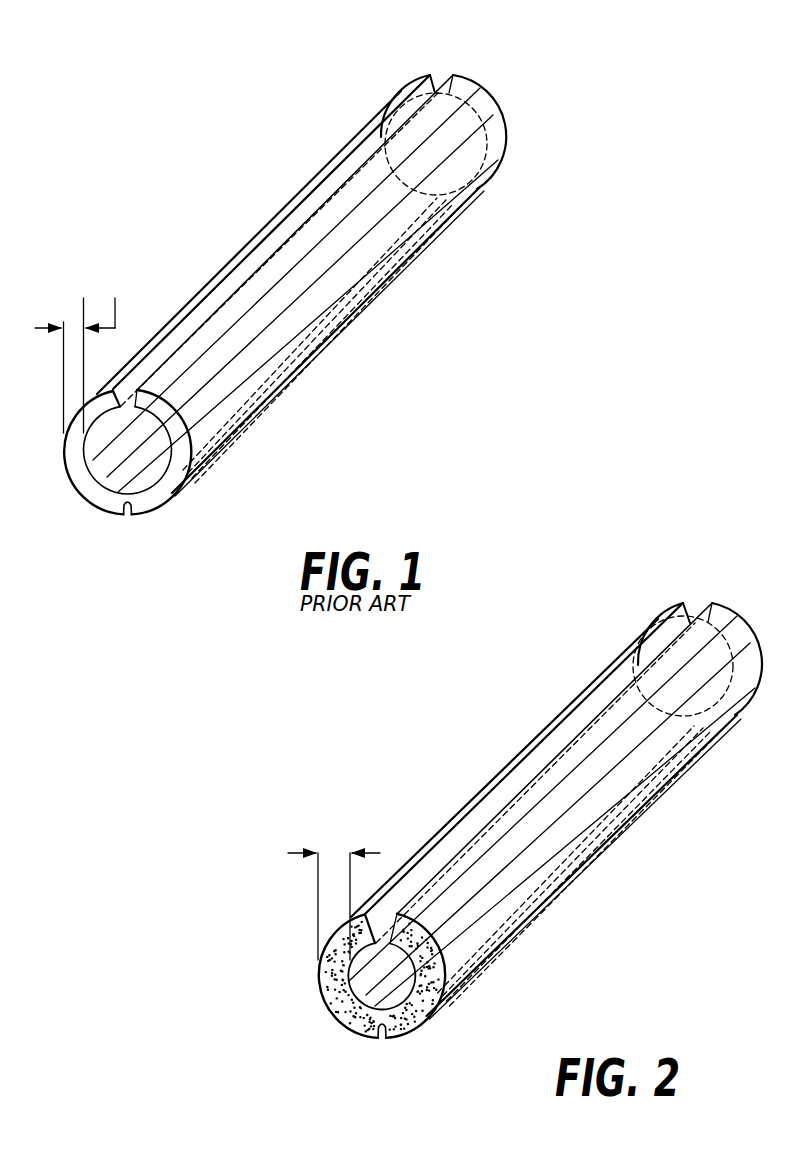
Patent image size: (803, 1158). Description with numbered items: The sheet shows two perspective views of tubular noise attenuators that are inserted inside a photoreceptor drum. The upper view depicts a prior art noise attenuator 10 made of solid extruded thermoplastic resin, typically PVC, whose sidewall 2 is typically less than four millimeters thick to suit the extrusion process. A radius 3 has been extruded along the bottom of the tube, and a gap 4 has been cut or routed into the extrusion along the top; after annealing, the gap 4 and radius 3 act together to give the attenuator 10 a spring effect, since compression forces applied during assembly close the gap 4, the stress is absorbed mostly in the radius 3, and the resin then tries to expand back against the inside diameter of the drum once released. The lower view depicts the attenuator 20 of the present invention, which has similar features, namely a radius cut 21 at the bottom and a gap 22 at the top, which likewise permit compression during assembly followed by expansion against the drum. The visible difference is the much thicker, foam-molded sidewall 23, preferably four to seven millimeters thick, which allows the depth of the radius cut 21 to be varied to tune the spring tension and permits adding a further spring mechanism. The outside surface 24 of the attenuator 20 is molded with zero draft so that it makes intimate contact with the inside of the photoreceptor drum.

In FIG. 1, the noise attenuator 10 is at (236, 184).
In FIG. 1, the sidewall 2 is at (77, 477).
In FIG. 1, the radius 3 is at (123, 520).
In FIG. 1, the gap 4 is at (441, 70).
In FIG. 2, the attenuator 20 is at (482, 740).
In FIG. 2, the radius cut 21 is at (381, 1046).
In FIG. 2, the gap 22 is at (701, 598).
In FIG. 2, the sidewall 23 is at (325, 1002).
In FIG. 2, the outside surface 24 is at (583, 830).